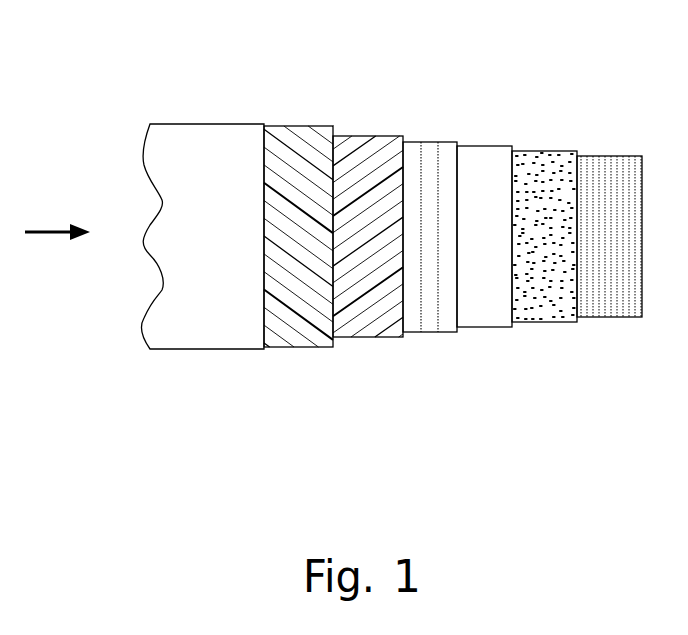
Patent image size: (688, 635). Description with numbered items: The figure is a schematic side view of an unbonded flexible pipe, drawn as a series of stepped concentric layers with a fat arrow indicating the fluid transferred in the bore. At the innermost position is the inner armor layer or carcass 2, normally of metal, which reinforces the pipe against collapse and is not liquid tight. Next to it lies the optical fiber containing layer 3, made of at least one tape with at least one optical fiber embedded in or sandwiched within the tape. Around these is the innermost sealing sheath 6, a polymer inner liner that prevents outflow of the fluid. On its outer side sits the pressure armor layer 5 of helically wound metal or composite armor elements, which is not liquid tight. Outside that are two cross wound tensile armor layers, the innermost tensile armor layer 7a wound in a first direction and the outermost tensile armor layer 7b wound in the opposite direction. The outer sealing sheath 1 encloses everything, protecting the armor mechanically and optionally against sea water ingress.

The outer sealing sheath 1 is at (184, 138).
The outermost tensile armor layer 7b is at (298, 142).
The innermost tensile armor layer 7a is at (367, 141).
The pressure armor layer 5 is at (430, 328).
The innermost sealing sheath 6 is at (484, 143).
The optical fiber containing layer 3 is at (541, 336).
The inner armor layer (carcass) 2 is at (610, 334).